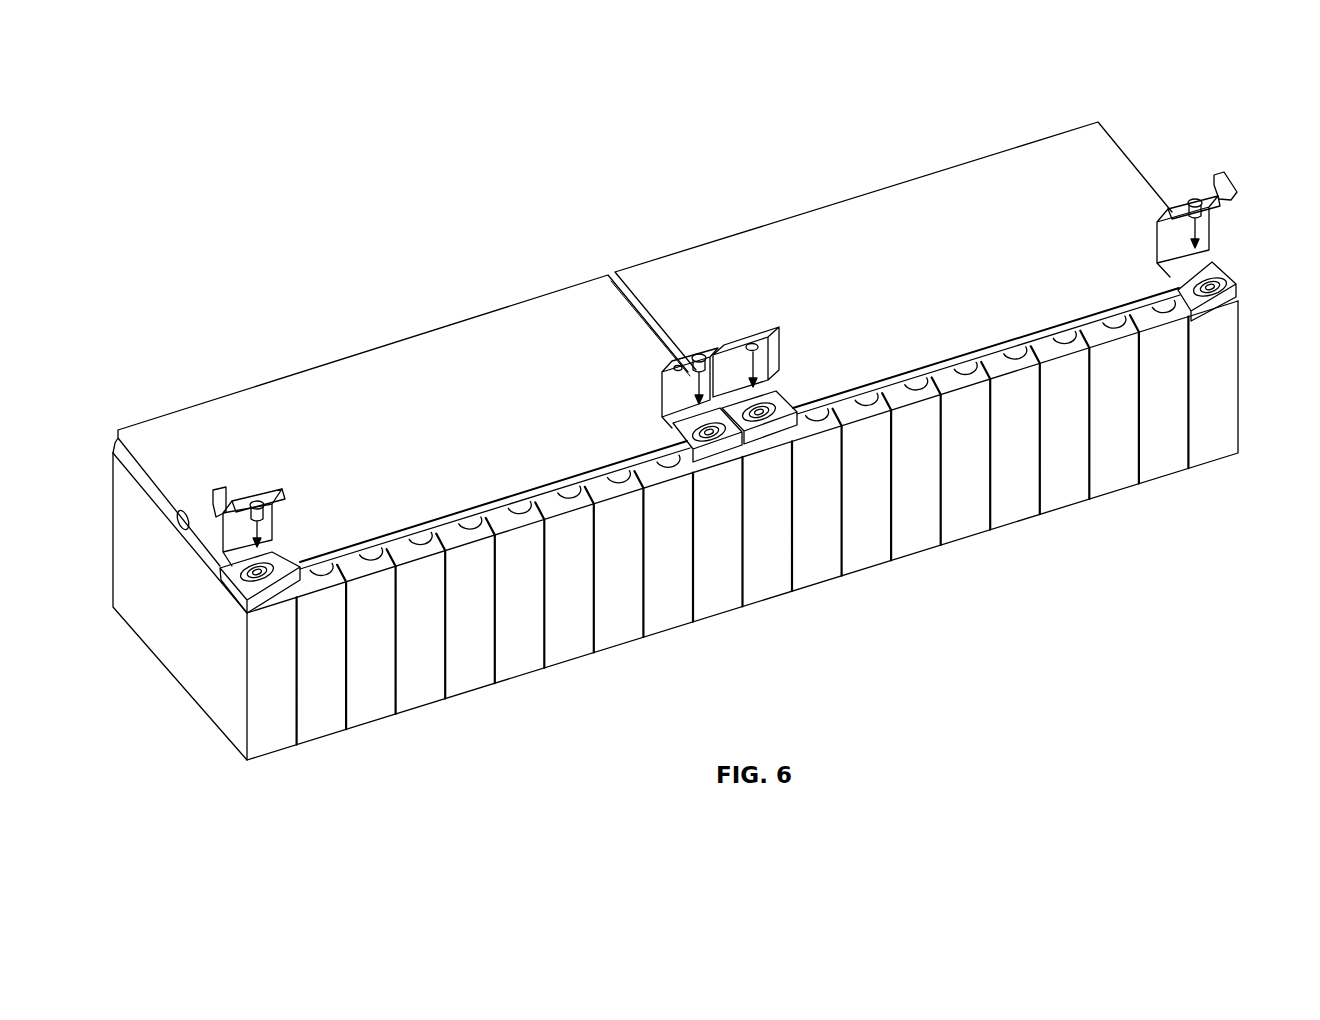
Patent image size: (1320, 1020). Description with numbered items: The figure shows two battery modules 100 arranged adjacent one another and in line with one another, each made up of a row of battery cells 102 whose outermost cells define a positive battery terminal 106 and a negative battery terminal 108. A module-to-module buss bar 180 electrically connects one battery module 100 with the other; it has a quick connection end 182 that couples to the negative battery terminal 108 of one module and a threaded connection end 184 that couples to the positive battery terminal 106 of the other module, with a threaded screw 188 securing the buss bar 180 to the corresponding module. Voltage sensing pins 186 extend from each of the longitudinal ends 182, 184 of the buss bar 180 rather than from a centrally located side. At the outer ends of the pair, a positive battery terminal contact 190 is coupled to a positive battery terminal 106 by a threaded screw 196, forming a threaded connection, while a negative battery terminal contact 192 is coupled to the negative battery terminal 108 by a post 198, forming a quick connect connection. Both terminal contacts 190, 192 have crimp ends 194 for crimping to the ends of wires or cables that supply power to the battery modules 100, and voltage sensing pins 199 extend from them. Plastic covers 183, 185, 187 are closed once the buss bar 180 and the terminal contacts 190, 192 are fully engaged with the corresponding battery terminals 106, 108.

The battery module 100 is at (846, 150).
The battery cell 102 is at (612, 632).
The positive battery terminal 106 is at (703, 432).
The negative battery terminal 108 is at (242, 568).
The module-to-module buss bar 180 is at (733, 353).
The quick connection end 182 is at (771, 326).
The plastic cover 183 is at (1165, 252).
The threaded connection end 184 is at (646, 353).
The plastic cover 185 is at (683, 397).
The voltage sensing pin 186 is at (760, 337).
The plastic cover 187 is at (232, 536).
The threaded screw 188 is at (697, 355).
The positive battery terminal contact 190 is at (1197, 187).
The negative battery terminal contact 192 is at (220, 540).
The crimp end 194 is at (216, 508).
The threaded screw 196 is at (1192, 200).
The post 198 is at (262, 512).
The voltage sensing pin 199 is at (262, 500).